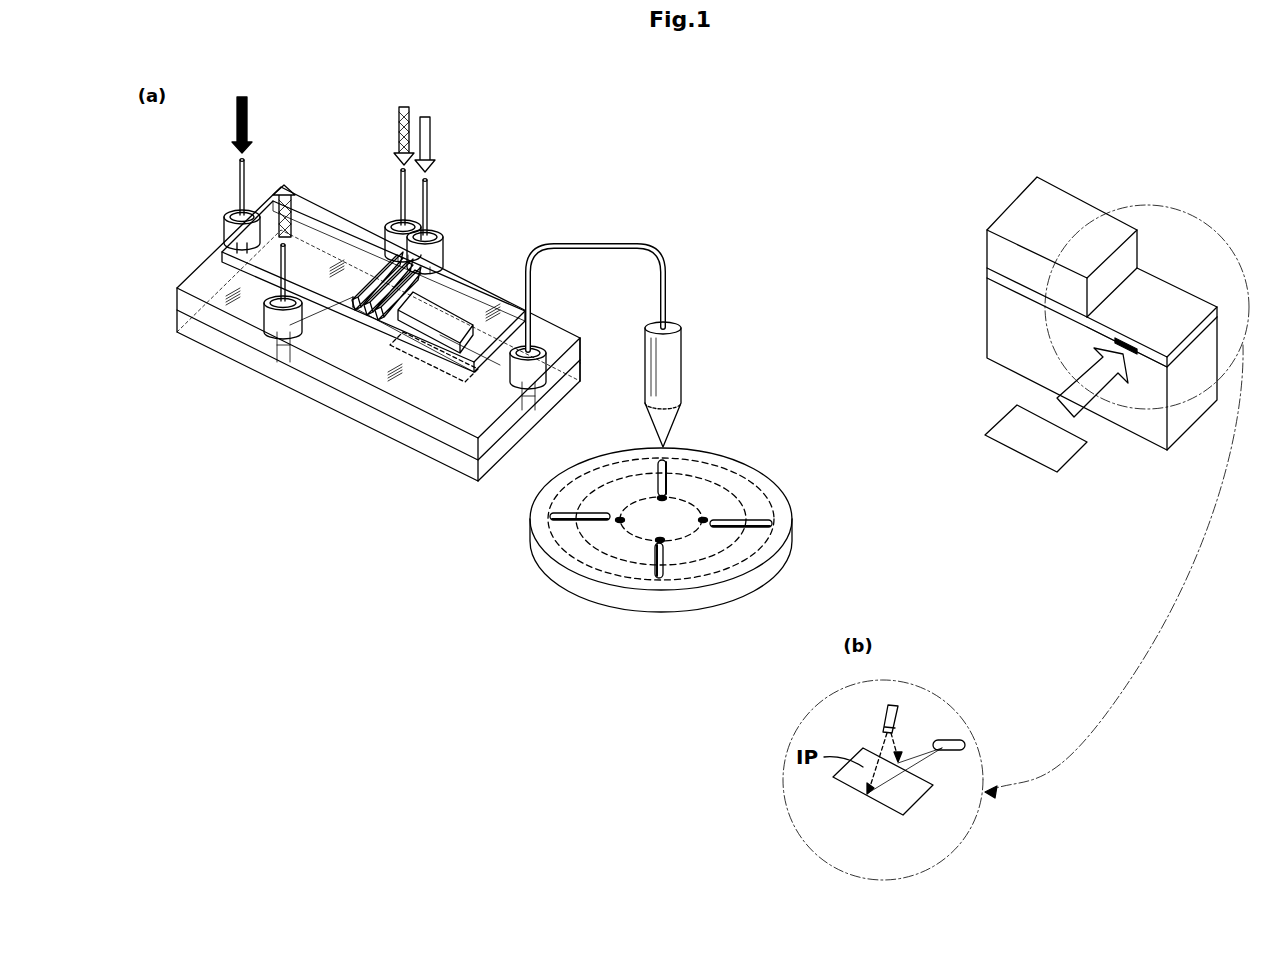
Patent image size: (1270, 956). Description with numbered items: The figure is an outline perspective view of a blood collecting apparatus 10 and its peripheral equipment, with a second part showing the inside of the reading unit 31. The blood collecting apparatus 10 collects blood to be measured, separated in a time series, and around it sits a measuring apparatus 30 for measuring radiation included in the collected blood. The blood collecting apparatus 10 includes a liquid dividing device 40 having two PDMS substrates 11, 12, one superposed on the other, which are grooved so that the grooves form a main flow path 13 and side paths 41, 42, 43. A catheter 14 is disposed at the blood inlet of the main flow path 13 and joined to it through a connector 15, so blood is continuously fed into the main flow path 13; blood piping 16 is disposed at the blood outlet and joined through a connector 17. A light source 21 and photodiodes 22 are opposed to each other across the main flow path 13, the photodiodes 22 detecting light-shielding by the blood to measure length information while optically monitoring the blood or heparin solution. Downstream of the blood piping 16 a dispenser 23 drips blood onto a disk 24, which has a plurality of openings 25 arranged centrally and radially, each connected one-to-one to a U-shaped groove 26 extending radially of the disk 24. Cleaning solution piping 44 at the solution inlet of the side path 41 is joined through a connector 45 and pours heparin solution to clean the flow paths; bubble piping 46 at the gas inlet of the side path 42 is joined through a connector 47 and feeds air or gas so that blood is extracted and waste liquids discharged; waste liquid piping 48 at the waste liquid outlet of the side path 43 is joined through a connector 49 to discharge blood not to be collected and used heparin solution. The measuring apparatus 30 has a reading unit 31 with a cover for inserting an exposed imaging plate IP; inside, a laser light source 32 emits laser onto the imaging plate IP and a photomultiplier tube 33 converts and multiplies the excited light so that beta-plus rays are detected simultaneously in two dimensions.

The blood collecting apparatus 10 is at (506, 238).
The PDMS substrate 11 is at (583, 347).
The PDMS substrate 12 is at (582, 363).
The main flow path 13 is at (483, 363).
The catheter 14 is at (238, 184).
The connector 15 is at (223, 231).
The blood piping 16 is at (611, 239).
The connector 17 is at (566, 387).
The light source 21 is at (440, 310).
The photodiodes 22 is at (440, 320).
The dispenser 23 is at (681, 376).
The disk 24 is at (795, 540).
The openings 25 is at (660, 546).
The U-shaped grooves 26 is at (550, 516).
The measuring apparatus 30 is at (964, 295).
The reading unit 31 is at (1187, 327).
The laser light source 32 is at (883, 712).
The photomultiplier tube 33 is at (957, 750).
The liquid dividing device 40 is at (387, 440).
The side path 41 is at (377, 280).
The side path 42 is at (360, 403).
The side path 43 is at (305, 330).
The cleaning solution piping 44 is at (399, 194).
The connector 45 is at (393, 220).
The bubble piping 46 is at (429, 194).
The connector 47 is at (443, 228).
The waste liquid piping 48 is at (267, 295).
The connector 49 is at (263, 323).
The imaging plate IP is at (1007, 425).